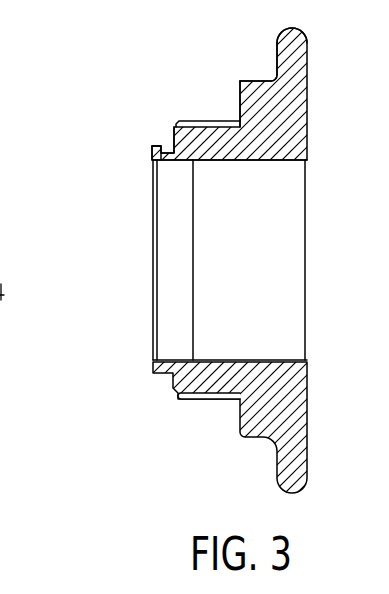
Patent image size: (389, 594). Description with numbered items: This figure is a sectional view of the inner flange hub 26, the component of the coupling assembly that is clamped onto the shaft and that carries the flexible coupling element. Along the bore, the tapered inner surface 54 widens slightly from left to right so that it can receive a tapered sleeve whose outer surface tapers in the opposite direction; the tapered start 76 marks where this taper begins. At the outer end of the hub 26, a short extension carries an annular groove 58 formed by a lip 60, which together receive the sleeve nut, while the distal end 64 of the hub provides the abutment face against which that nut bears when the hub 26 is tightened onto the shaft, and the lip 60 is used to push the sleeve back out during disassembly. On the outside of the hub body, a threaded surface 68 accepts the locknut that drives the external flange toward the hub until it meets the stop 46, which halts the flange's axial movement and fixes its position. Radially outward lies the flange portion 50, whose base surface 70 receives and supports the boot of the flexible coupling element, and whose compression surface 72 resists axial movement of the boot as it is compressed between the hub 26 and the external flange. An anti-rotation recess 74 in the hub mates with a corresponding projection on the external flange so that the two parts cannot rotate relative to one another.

The inner flange hub 26 is at (86, 61).
The flange portion 50 is at (294, 59).
The tapered inner surface 54 is at (258, 162).
The tapered start 76 is at (195, 162).
The annular groove 58 is at (167, 148).
The lip 60 is at (155, 146).
The distal end 64 is at (152, 150).
The threaded surface 68 is at (208, 119).
The stop 46 is at (235, 98).
The base surface 70 is at (257, 80).
The compression surface 72 is at (275, 60).
The anti-rotation recess 74 is at (205, 395).